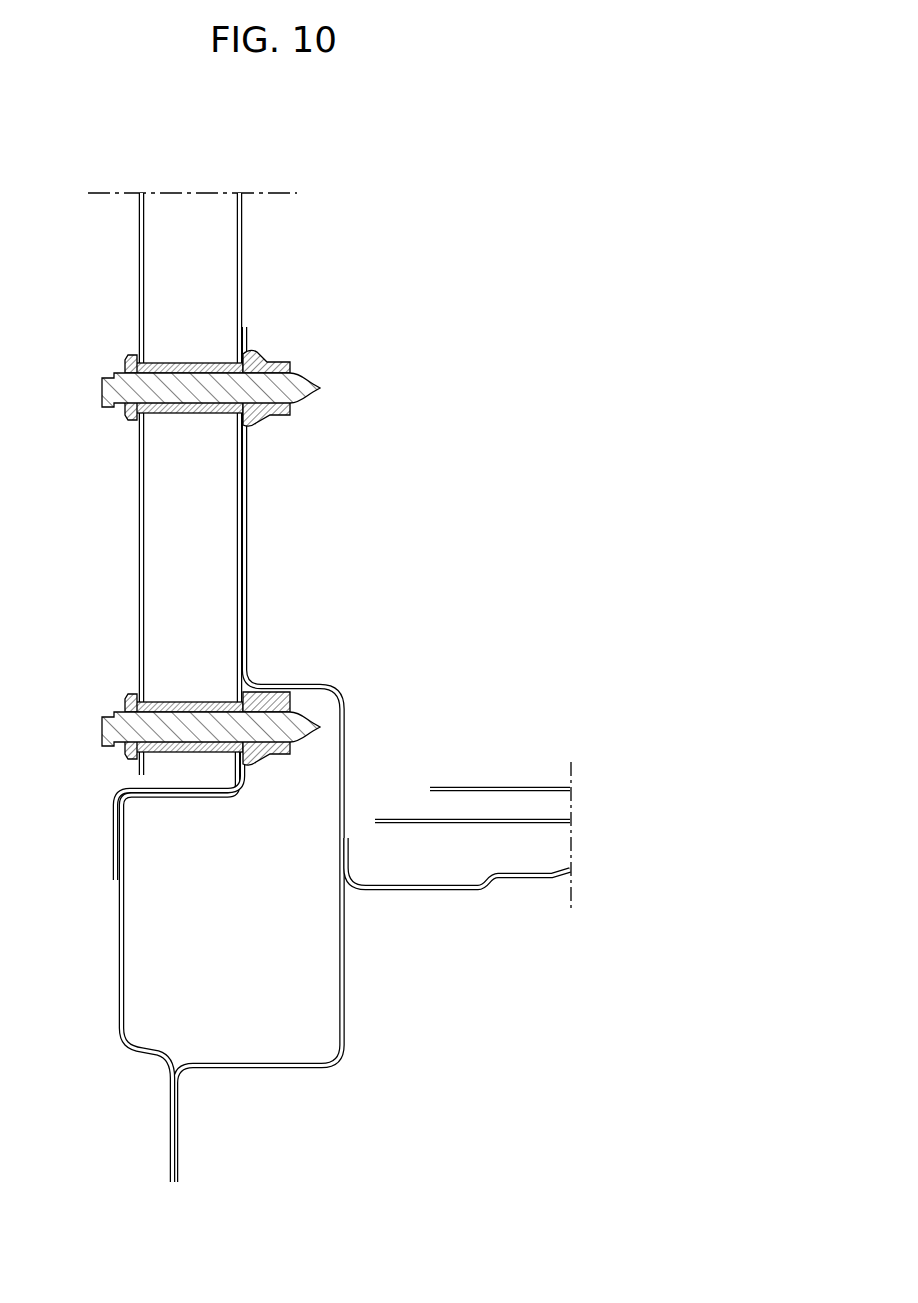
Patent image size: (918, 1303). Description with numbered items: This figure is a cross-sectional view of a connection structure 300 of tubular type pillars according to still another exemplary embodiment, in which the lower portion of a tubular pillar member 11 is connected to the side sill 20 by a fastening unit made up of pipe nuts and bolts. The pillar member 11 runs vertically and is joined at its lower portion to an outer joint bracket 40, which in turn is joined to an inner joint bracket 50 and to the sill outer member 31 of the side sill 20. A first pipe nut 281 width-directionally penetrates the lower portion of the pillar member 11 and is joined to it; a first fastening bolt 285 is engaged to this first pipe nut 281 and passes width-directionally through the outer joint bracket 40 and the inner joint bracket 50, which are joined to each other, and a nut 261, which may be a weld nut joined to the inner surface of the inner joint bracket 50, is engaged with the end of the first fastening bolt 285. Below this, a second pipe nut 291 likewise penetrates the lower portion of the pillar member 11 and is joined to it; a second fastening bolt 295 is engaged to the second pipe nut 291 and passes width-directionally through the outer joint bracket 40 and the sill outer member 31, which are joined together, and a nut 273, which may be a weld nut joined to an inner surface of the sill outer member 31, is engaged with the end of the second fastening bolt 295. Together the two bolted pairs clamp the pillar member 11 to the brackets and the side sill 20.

The connection structure 300 is at (424, 146).
The pillar member 11 is at (139, 521).
The outer joint bracket 40 is at (248, 505).
The inner joint bracket 50 is at (249, 459).
The side sill 20 is at (114, 1051).
The sill outer member 31 is at (118, 922).
The first pipe nut 281 is at (189, 362).
The nut 261 is at (281, 360).
The first fastening bolt 285 is at (101, 383).
The second pipe nut 291 is at (188, 701).
The nut 273 is at (273, 699).
The second fastening bolt 295 is at (101, 722).